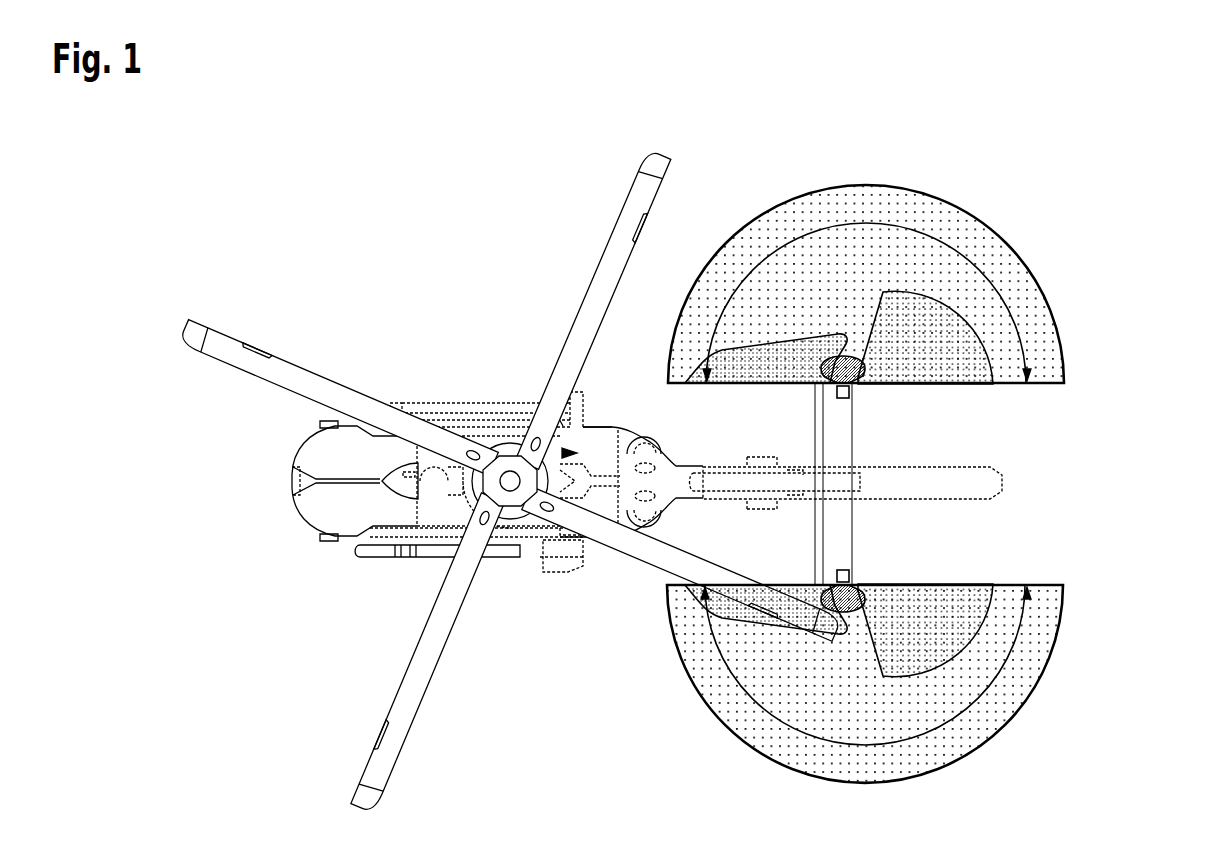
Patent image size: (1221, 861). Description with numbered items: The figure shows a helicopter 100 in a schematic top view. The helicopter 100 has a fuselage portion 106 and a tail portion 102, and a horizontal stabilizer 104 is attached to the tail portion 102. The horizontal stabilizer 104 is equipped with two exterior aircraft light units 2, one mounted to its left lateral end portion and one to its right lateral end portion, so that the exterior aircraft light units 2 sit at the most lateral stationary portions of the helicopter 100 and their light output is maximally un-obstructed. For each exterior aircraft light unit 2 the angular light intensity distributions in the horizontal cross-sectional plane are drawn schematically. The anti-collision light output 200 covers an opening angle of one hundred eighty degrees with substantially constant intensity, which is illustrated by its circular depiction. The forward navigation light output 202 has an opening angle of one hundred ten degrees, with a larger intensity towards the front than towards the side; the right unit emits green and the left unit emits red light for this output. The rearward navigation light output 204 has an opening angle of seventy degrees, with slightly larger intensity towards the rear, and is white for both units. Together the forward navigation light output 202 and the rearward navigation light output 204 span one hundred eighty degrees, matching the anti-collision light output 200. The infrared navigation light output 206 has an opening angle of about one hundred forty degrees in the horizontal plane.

The helicopter 100 is at (395, 216).
The tail portion 102 is at (1075, 456).
The horizontal stabilizer 104 is at (840, 519).
The fuselage portion 106 is at (420, 366).
The anti-collision light output 200 is at (1028, 303).
The forward navigation light output 202 is at (728, 373).
The rearward navigation light output 204 is at (948, 376).
The infrared navigation light output 206 is at (866, 393).
The exterior aircraft light unit 2 is at (833, 392).